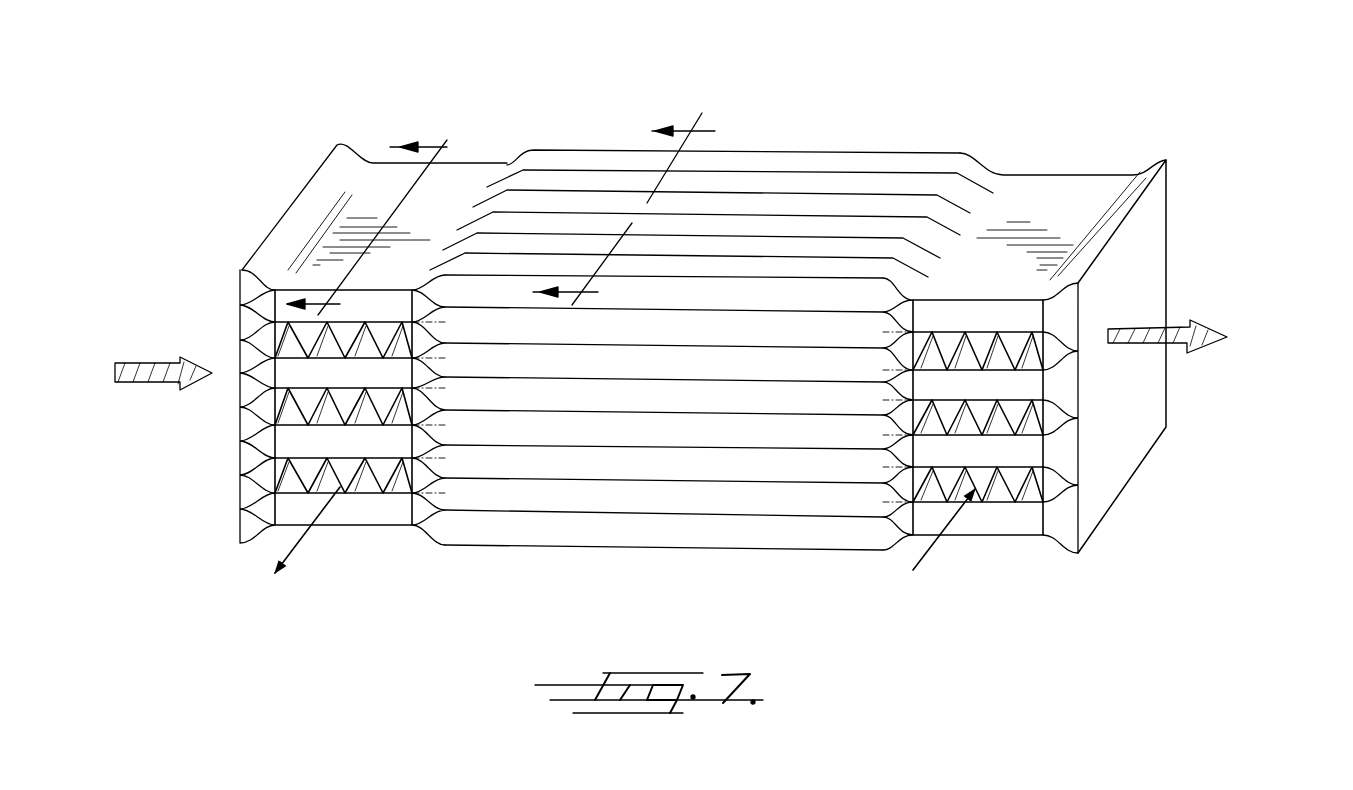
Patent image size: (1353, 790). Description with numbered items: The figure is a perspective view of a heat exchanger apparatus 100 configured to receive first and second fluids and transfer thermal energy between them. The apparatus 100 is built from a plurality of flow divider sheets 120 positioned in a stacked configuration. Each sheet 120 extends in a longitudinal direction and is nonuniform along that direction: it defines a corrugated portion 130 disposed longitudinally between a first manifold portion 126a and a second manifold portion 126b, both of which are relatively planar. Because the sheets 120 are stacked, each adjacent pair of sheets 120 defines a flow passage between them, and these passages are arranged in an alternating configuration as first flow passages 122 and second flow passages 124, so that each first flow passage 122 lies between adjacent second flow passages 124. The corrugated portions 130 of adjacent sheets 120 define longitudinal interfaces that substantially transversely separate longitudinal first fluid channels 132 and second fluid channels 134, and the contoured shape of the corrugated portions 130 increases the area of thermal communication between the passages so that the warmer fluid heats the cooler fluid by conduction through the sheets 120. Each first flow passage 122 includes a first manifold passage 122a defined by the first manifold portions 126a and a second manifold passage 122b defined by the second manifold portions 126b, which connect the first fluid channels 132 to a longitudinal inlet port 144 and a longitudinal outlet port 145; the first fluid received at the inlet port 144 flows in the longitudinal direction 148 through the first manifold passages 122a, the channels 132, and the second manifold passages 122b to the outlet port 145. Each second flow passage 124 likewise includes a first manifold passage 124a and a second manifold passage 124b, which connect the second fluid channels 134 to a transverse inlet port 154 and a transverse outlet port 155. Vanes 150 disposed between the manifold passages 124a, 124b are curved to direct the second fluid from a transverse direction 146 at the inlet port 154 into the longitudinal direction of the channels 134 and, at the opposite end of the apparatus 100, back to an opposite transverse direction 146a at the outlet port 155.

The heat exchanger apparatus 100 is at (876, 119).
The flow divider sheet 120 is at (1073, 190).
The first flow passage 122 is at (702, 362).
The first manifold passage 122a is at (248, 310).
The second manifold passage 122b is at (1160, 262).
The second flow passage 124 is at (659, 473).
The first manifold passage 124a is at (429, 346).
The second manifold passage 124b is at (895, 339).
The first manifold portion 126a is at (381, 178).
The second manifold portion 126b is at (1022, 190).
The corrugated portion 130 is at (568, 176).
The first fluid channel 132 is at (664, 437).
The second fluid channel 134 is at (567, 497).
The inlet port 144 is at (240, 361).
The outlet port 145 is at (1164, 309).
The transverse direction 146 is at (912, 568).
The opposite transverse direction 146a is at (270, 553).
The longitudinal direction 148 is at (143, 383).
The vane 150 is at (252, 318).
The transverse inlet port 154 is at (999, 512).
The transverse outlet port 155 is at (286, 491).